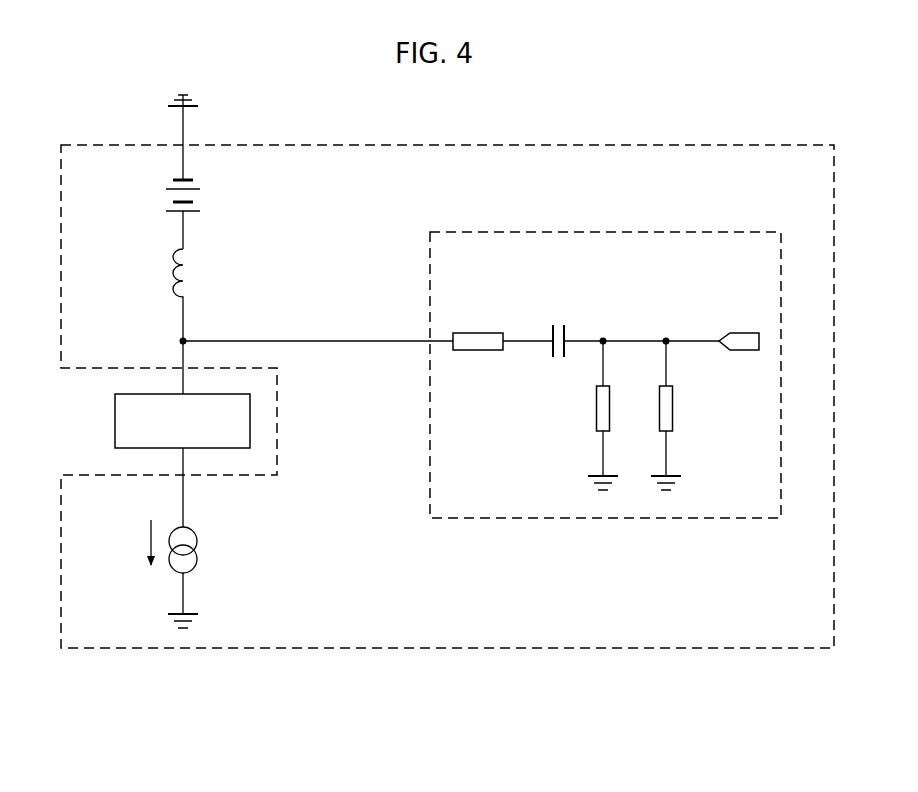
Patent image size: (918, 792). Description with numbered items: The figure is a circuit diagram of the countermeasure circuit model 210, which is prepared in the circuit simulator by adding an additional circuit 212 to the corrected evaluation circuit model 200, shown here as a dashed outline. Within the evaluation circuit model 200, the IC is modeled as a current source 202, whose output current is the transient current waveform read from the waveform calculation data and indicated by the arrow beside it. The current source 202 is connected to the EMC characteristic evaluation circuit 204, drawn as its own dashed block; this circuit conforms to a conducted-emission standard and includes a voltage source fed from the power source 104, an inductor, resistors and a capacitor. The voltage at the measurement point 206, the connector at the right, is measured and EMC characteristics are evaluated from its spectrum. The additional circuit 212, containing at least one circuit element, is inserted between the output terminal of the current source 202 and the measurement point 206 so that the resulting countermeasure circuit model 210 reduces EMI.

The evaluation circuit model 200 is at (778, 145).
The power source 104 is at (210, 182).
The additional circuit 212 is at (115, 418).
The current source 202 is at (197, 560).
The EMC characteristic evaluation circuit 204 is at (705, 232).
The measurement point 206 is at (740, 333).
The countermeasure circuit model 210 is at (474, 695).